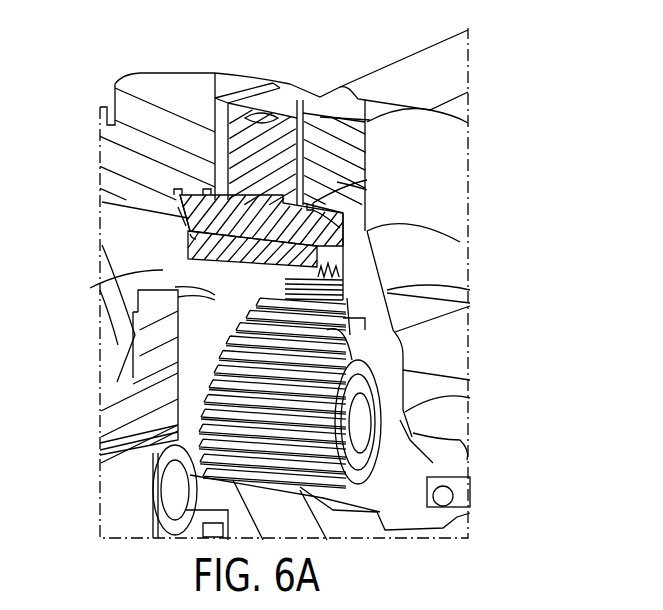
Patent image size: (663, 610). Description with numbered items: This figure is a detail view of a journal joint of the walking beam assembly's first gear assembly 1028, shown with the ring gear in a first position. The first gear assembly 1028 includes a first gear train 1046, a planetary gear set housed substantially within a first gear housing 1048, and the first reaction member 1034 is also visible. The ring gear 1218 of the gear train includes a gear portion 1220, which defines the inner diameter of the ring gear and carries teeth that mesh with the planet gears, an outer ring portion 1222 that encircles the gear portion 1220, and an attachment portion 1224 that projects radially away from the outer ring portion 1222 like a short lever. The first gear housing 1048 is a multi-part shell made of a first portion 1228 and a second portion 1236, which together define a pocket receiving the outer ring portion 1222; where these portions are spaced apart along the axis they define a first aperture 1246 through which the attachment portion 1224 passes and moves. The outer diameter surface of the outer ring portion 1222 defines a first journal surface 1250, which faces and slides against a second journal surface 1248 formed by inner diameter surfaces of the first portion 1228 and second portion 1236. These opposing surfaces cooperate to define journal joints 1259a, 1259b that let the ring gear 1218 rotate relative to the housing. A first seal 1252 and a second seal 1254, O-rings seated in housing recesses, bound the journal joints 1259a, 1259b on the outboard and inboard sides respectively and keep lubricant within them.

The first reaction member 1034 is at (426, 73).
The first portion 1228 is at (125, 102).
The first gear housing 1048 is at (105, 149).
The first aperture 1246 is at (228, 92).
The attachment portion 1224 is at (262, 122).
The second portion 1236 is at (365, 150).
The journal joint 1259a is at (181, 195).
The first journal surface 1250 is at (189, 196).
The outer ring portion 1222 is at (175, 225).
The second journal surface 1248 is at (183, 216).
The first seal 1252 is at (188, 227).
The second seal 1254 is at (343, 233).
The journal joint 1259b is at (345, 193).
The ring gear 1218 is at (326, 258).
The gear portion 1220 is at (187, 256).
The first gear train 1046 is at (323, 358).
The first gear assembly 1028 is at (403, 416).